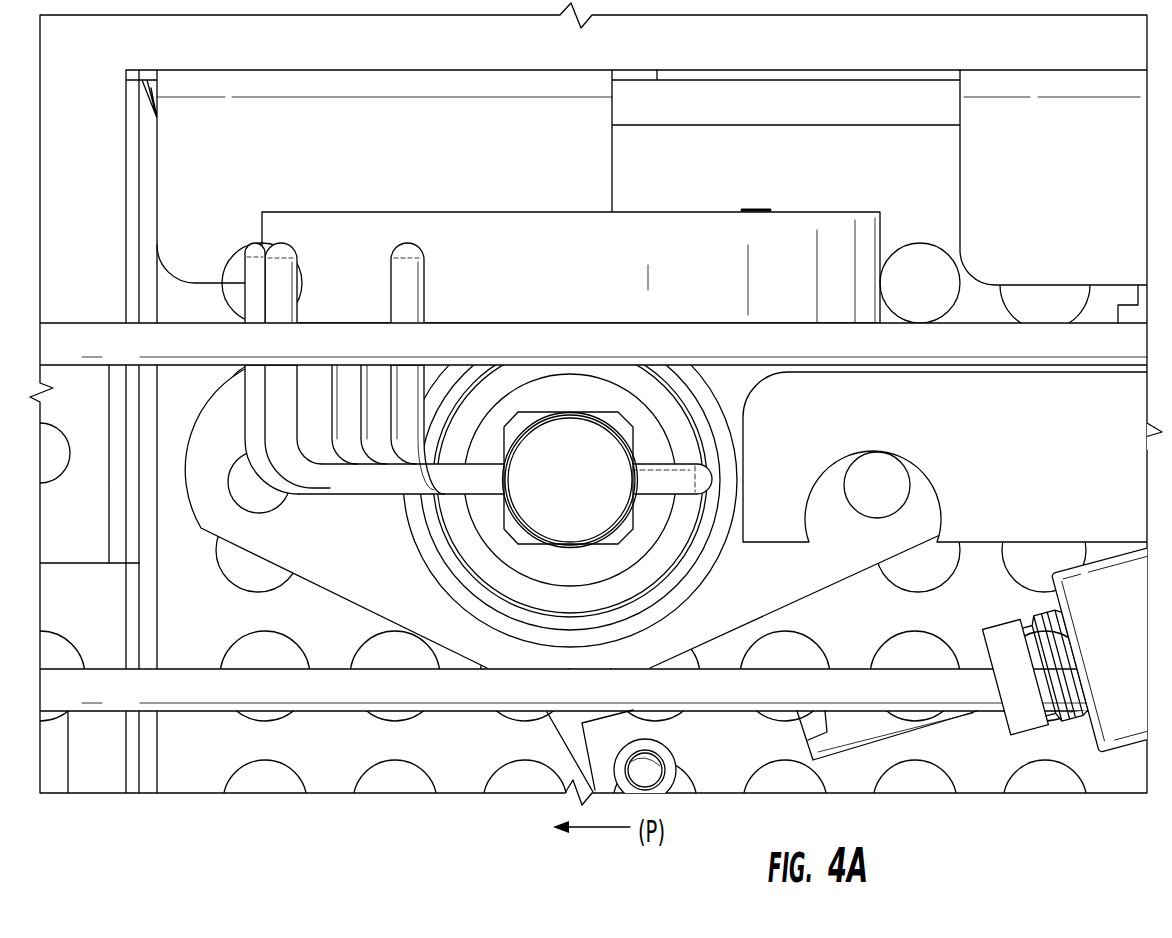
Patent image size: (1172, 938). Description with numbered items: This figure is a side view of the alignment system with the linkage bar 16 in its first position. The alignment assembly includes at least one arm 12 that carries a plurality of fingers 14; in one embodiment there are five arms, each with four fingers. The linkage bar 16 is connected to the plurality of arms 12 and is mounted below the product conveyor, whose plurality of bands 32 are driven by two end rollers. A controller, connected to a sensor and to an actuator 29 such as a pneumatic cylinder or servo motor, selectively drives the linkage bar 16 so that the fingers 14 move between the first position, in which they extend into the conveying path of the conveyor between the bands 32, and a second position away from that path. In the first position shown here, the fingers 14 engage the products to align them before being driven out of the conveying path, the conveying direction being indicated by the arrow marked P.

The arm 12 is at (353, 480).
The fingers 14 is at (408, 260).
The linkage bar 16 is at (558, 437).
The actuator 29 is at (1009, 640).
The bands 32 is at (905, 333).